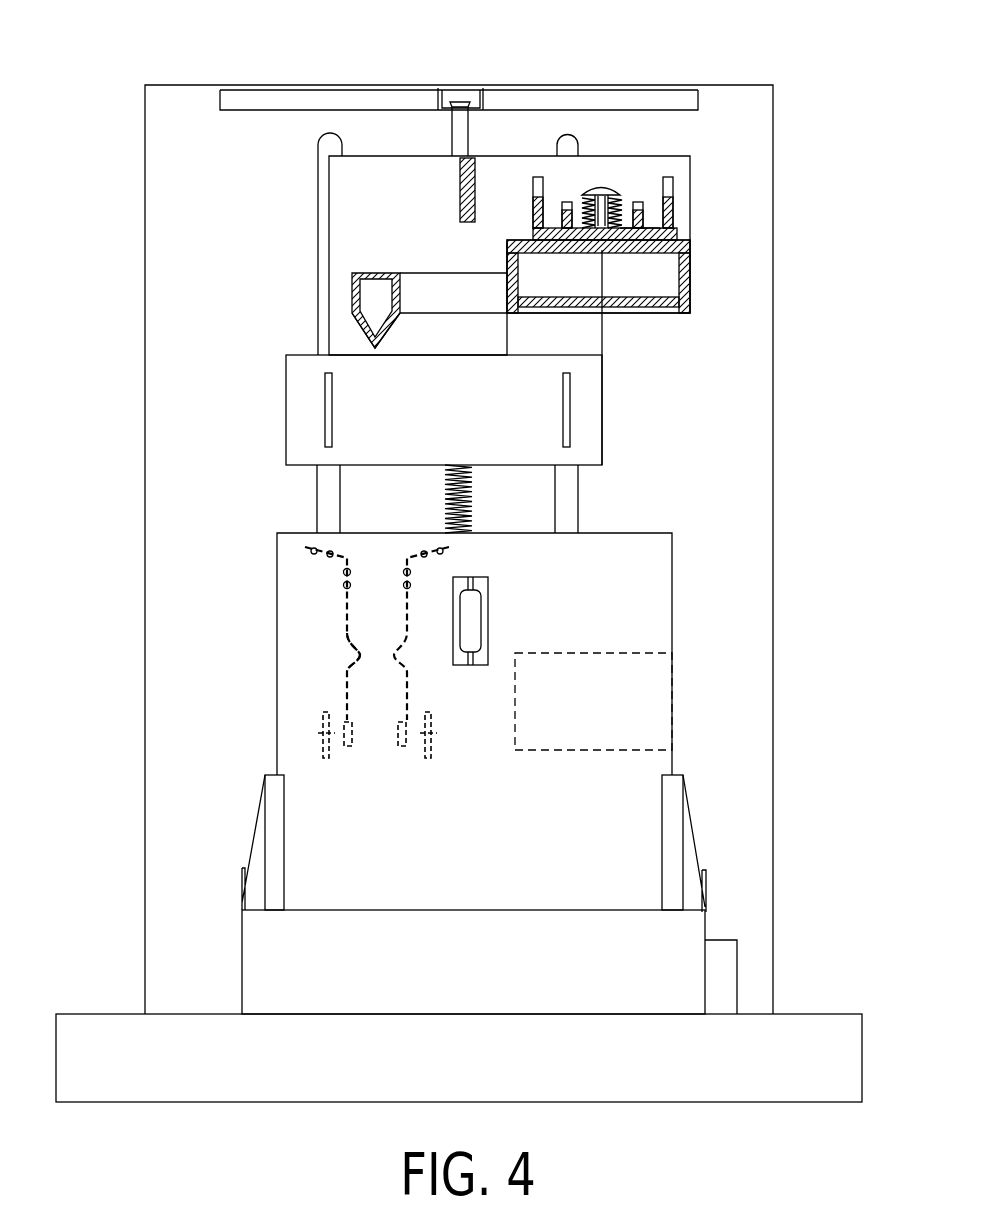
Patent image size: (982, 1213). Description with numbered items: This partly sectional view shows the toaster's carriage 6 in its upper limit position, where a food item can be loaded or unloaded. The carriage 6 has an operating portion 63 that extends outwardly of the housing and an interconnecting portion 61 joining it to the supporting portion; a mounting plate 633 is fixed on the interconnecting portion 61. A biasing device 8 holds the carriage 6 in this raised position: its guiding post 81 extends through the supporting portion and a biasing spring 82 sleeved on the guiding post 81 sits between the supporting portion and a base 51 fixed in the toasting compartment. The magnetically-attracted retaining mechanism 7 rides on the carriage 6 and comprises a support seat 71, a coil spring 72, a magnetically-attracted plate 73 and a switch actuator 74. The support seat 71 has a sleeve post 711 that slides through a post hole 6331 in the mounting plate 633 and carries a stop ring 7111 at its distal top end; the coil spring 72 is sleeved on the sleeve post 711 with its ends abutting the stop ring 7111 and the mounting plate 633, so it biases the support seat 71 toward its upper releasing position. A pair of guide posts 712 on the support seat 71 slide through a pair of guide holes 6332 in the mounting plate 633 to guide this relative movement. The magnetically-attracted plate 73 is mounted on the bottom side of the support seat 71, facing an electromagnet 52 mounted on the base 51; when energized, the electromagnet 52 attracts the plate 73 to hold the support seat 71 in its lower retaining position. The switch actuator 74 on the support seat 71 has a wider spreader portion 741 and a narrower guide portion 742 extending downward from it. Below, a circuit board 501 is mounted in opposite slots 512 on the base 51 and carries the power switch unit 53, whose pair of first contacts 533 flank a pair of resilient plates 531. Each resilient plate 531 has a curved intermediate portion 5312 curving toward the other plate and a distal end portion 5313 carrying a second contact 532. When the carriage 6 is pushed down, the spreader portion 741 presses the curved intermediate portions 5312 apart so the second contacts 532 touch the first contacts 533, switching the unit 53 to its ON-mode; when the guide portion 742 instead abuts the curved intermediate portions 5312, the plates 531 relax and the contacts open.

The carriage 6 is at (417, 153).
The interconnecting portion 61 is at (360, 192).
The operating portion 63 is at (460, 187).
The mounting plate 633 is at (557, 228).
The post hole 6331 is at (612, 197).
The guide holes 6332 is at (600, 188).
The magnetically-attracted retaining mechanism 7 is at (698, 272).
The support seat 71 is at (690, 258).
The sleeve post 711 is at (627, 222).
The stop ring 7111 is at (640, 202).
The guide posts 712 is at (647, 200).
The coil spring 72 is at (650, 215).
The magnetically-attracted plate 73 is at (633, 300).
The switch actuator 74 is at (417, 272).
The spreader portion 741 is at (357, 297).
The guide portion 742 is at (357, 323).
The biasing device 8 is at (440, 132).
The guiding post 81 is at (468, 130).
The biasing spring 82 is at (470, 497).
The base 51 is at (677, 933).
The circuit board 501 is at (632, 627).
The slots 512 is at (672, 797).
The electromagnet 52 is at (657, 710).
The power switch unit 53 is at (258, 688).
The resilient plates 531 is at (347, 618).
The curved intermediate portion 5312 is at (358, 657).
The distal end portion 5313 is at (347, 717).
The second contact 532 is at (367, 747).
The first contacts 533 is at (323, 733).